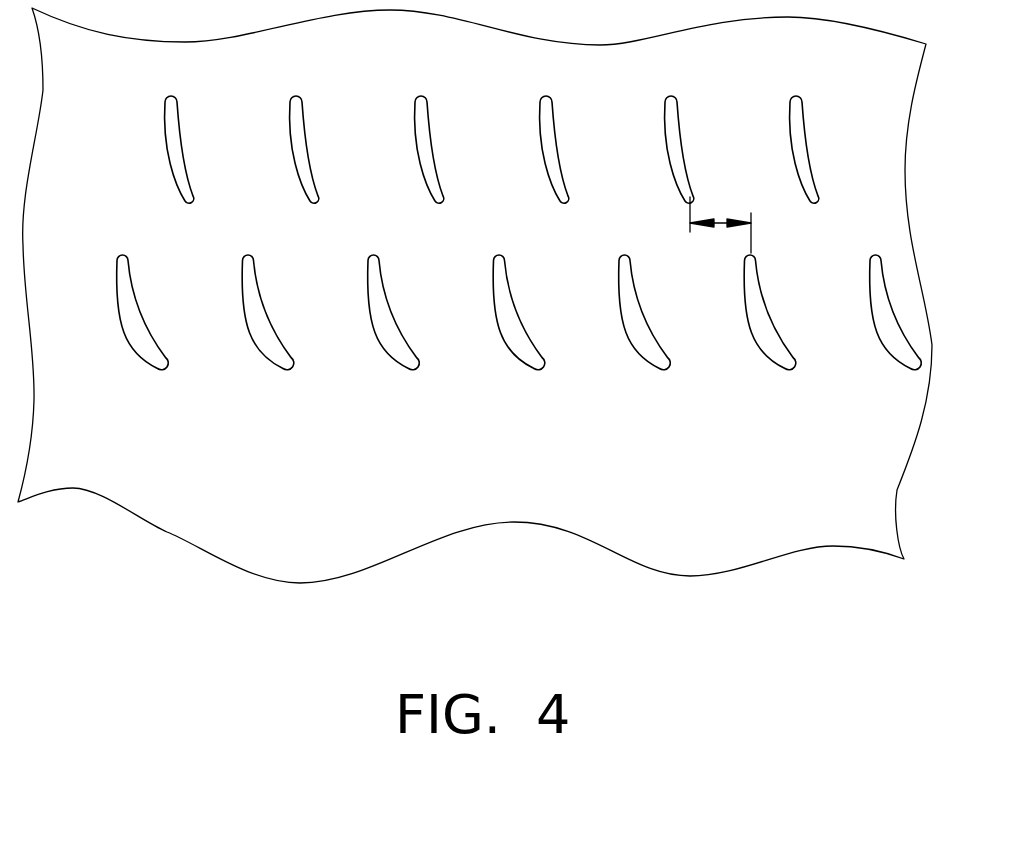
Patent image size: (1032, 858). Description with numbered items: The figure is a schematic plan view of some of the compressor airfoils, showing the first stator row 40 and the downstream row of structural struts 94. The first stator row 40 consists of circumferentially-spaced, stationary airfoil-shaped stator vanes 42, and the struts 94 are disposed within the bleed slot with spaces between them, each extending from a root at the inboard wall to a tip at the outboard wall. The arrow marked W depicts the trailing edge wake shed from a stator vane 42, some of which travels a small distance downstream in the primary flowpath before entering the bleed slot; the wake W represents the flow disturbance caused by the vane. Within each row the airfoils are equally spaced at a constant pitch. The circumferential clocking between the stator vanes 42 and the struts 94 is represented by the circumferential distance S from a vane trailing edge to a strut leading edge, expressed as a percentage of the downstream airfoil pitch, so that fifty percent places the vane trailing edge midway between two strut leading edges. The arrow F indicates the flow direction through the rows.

The first stator row 40 is at (128, 368).
The stator vane 42 is at (148, 356).
The structural strut 94 is at (168, 107).
The trailing edge wake W is at (496, 233).
The circumferential clocking distance S is at (722, 227).
The flow direction F is at (548, 398).